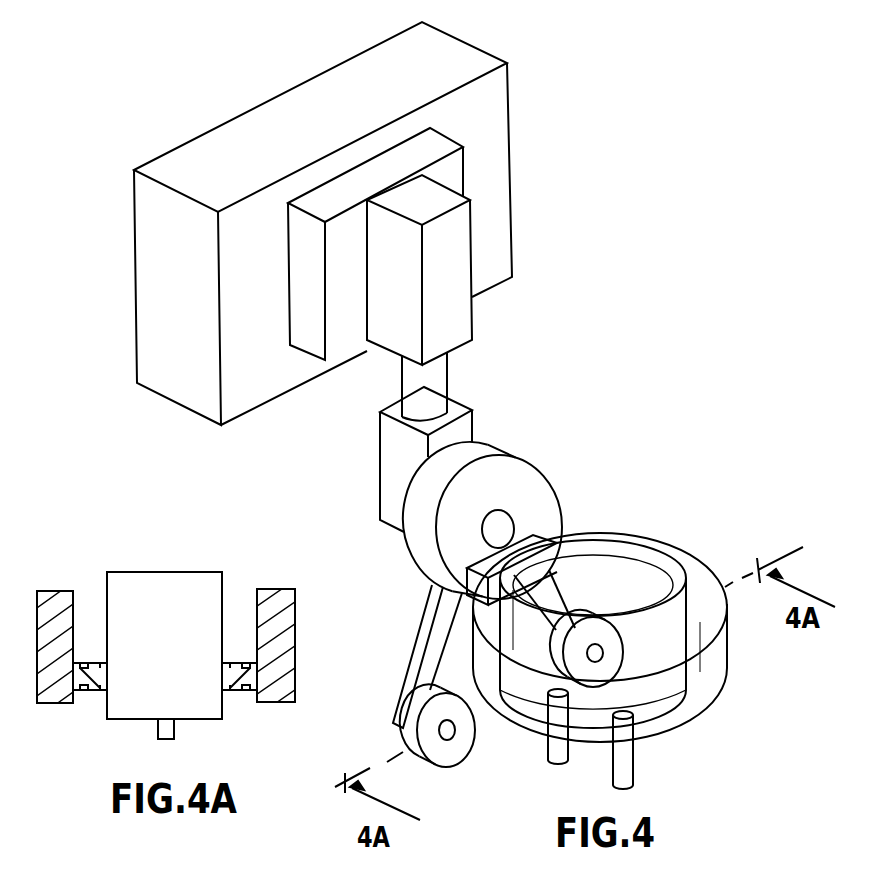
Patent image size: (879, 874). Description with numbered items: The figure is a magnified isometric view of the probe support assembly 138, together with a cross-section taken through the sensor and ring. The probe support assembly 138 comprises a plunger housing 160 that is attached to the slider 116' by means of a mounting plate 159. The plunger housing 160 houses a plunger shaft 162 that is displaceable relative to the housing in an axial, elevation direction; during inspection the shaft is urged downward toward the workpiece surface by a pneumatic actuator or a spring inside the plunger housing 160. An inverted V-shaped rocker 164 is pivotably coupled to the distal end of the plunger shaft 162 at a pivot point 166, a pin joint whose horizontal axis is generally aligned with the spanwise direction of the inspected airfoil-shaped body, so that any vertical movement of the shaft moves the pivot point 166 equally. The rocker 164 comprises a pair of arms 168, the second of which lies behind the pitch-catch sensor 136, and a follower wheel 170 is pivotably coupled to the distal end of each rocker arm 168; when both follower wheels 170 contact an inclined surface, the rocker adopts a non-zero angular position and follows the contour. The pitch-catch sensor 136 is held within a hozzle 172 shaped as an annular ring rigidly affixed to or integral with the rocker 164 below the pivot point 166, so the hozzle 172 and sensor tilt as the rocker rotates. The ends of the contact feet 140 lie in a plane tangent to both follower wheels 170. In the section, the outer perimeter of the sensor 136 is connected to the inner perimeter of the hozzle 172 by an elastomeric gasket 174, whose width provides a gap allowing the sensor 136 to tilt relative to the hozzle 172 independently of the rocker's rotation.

In FIG. 4, the slider 116' is at (323, 223).
In FIG. 4, the mounting plate 159 is at (448, 135).
In FIG. 4, the plunger housing 160 is at (472, 232).
In FIG. 4, the plunger shaft 162 is at (446, 384).
In FIG. 4, the probe support assembly 138 is at (543, 428).
In FIG. 4, the rocker 164 is at (420, 557).
In FIG. 4, the pivot point 166 is at (500, 528).
In FIG. 4, the rocker arm 168 is at (408, 664).
In FIG. 4, the follower wheel 170 is at (444, 767).
In FIG. 4, the pitch-catch sensor 136 is at (640, 535).
In FIG. 4A, the pitch-catch sensor 136 is at (162, 570).
In FIG. 4, the hozzle 172 is at (727, 648).
In FIG. 4A, the hozzle 172 is at (57, 590).
In FIG. 4, the contact feet 140 is at (558, 753).
In FIG. 4A, the contact feet 140 is at (175, 730).
In FIG. 4A, the gasket 174 is at (92, 688).